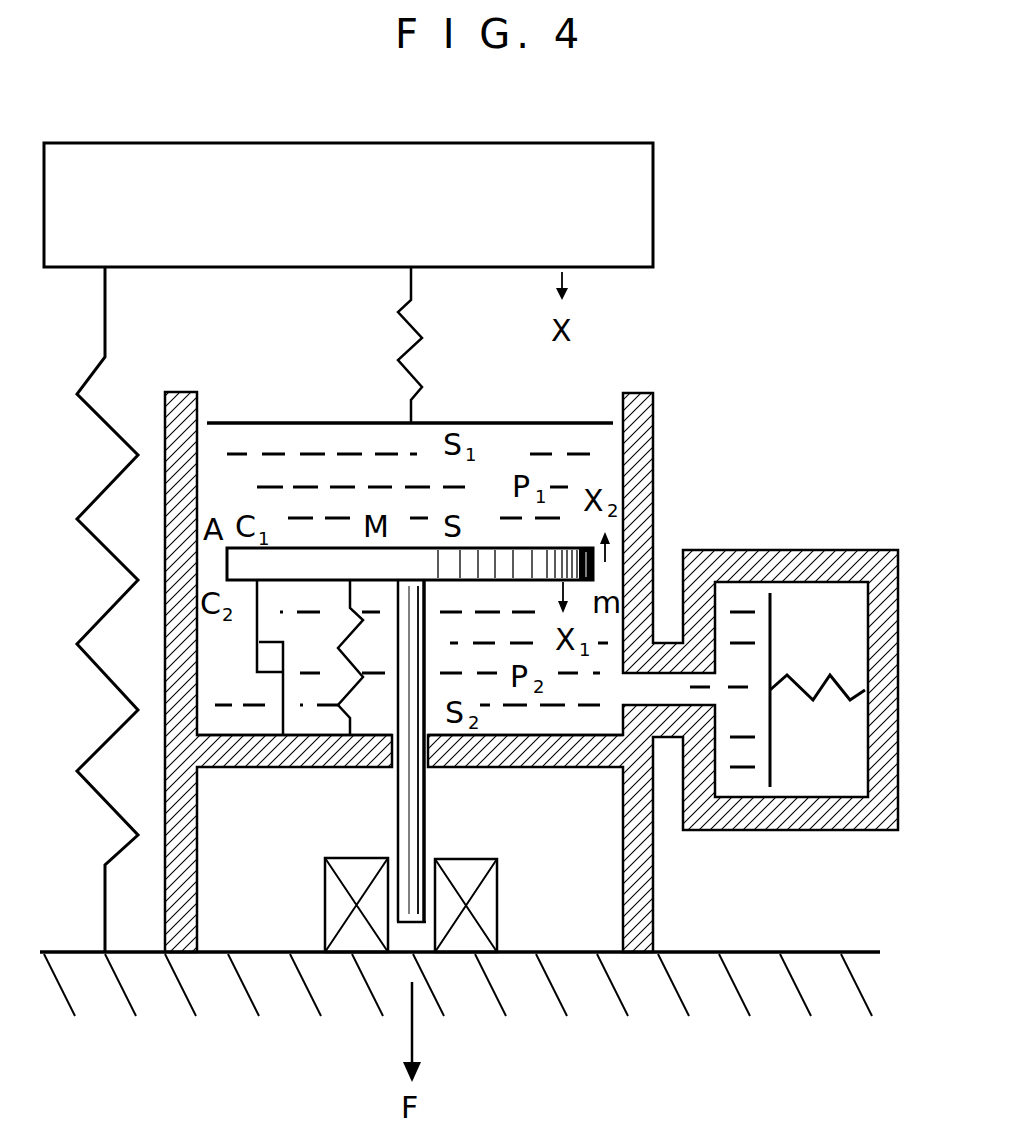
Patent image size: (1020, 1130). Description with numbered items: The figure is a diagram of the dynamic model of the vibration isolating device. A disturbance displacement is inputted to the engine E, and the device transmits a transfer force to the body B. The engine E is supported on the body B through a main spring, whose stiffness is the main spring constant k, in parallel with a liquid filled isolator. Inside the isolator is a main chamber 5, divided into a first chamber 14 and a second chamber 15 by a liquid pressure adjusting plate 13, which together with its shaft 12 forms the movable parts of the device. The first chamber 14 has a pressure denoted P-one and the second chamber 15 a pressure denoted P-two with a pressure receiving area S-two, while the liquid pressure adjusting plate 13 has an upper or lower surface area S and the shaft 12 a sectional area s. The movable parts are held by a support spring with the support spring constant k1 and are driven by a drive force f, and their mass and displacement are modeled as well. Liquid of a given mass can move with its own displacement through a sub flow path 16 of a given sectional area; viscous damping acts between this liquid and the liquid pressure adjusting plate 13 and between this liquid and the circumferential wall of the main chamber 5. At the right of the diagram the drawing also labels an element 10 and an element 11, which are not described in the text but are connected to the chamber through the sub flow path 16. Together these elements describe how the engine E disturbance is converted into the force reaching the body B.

The main chamber 5 is at (258, 453).
The reservoir (accumulator) 10 is at (747, 675).
The orifice passage 11 is at (672, 693).
The shaft 12 is at (456, 849).
The liquid pressure adjusting plate 13 is at (490, 548).
The first chamber 14 is at (228, 487).
The second chamber 15 is at (230, 645).
The sub flow path 16 is at (613, 565).
The engine E is at (653, 163).
The body B is at (747, 952).
The main spring constant k is at (107, 609).
The support spring constant k1 is at (340, 657).
The drive force f is at (259, 657).
The sectional area of the shaft s is at (420, 751).